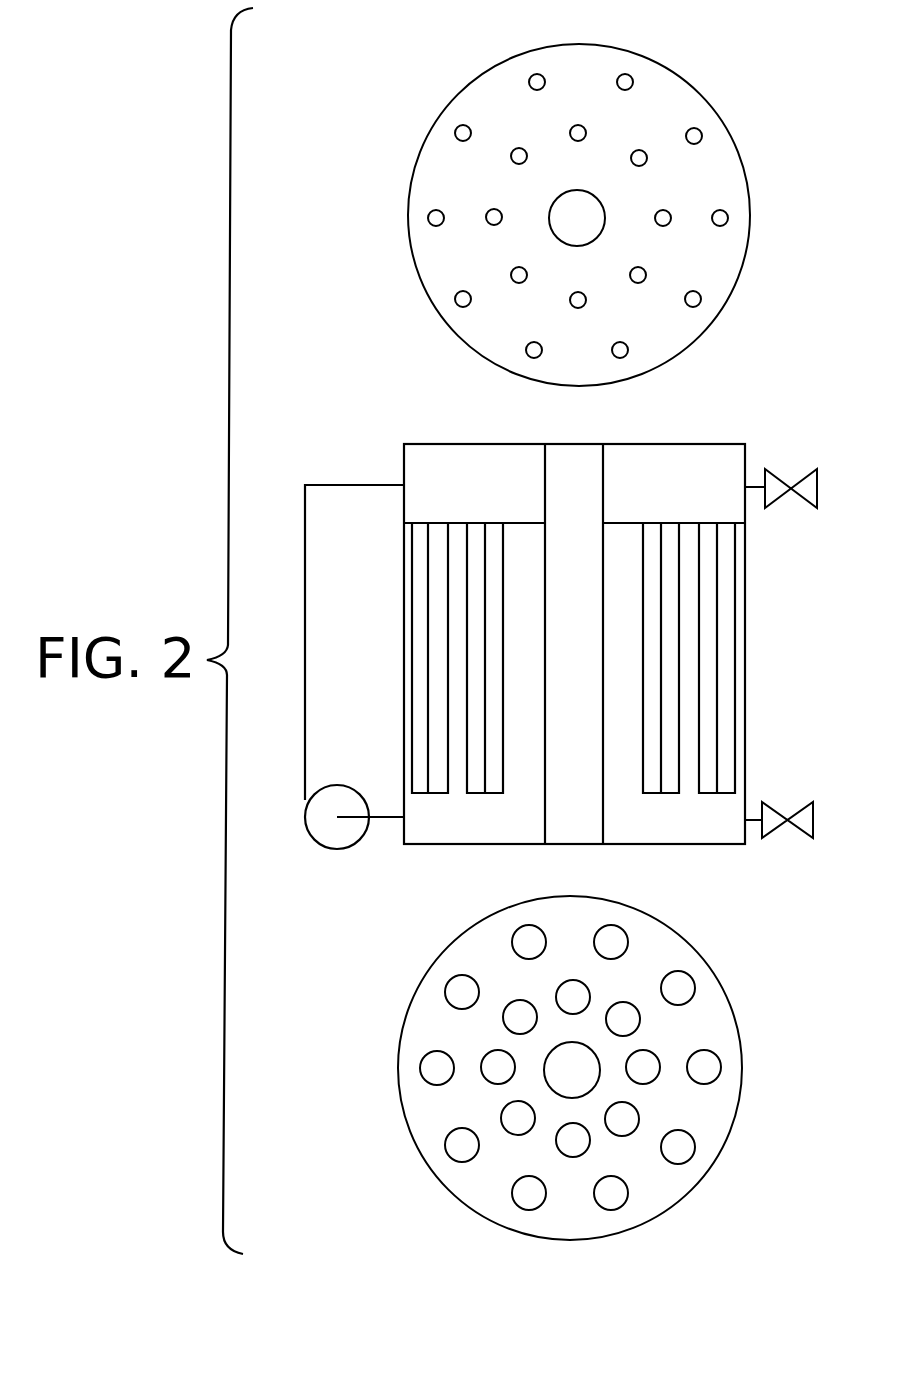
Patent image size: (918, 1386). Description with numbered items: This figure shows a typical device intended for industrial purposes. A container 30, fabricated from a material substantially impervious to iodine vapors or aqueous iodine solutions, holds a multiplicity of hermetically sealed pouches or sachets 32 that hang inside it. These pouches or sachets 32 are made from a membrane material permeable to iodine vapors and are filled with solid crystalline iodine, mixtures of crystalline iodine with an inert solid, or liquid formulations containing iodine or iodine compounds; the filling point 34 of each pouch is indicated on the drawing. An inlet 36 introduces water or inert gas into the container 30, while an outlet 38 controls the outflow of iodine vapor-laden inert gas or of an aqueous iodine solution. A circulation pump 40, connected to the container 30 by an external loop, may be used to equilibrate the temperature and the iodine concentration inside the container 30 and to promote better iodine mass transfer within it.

The container 30 is at (404, 683).
The pouches or sachets 32 is at (412, 551).
The filling point 34 is at (427, 603).
The inlet 36 is at (802, 480).
The outlet 38 is at (798, 810).
The circulation pump 40 is at (362, 794).